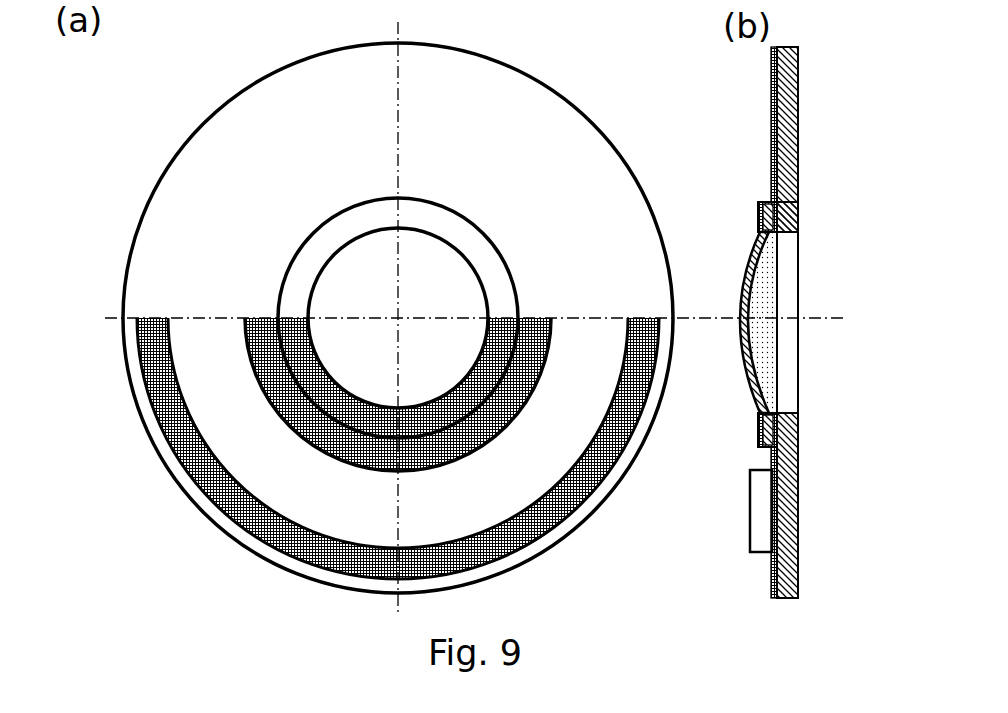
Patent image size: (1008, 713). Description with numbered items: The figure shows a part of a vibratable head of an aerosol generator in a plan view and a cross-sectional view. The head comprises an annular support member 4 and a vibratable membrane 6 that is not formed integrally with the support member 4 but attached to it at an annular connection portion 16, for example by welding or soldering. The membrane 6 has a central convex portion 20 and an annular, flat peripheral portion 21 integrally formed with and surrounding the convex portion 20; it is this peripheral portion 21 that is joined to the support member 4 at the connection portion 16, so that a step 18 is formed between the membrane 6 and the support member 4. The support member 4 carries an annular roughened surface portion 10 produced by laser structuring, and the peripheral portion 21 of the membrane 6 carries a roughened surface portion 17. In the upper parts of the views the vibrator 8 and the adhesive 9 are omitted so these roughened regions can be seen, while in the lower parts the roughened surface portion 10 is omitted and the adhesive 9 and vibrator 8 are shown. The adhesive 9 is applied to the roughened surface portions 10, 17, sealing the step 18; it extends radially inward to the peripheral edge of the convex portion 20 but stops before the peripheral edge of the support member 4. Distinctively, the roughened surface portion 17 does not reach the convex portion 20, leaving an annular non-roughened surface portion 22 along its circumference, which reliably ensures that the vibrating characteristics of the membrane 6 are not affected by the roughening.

The support member 4 is at (190, 126).
The vibratable membrane 6 is at (433, 287).
The vibrator 8 is at (205, 405).
The adhesive 9 is at (228, 500).
The roughened surface portion 10 is at (548, 127).
The connection portion 16 is at (780, 215).
The roughened surface portion 17 is at (302, 270).
The step 18 is at (762, 198).
The convex portion 20 is at (743, 365).
The peripheral portion 21 is at (755, 433).
The non-roughened surface portion 22 is at (760, 227).